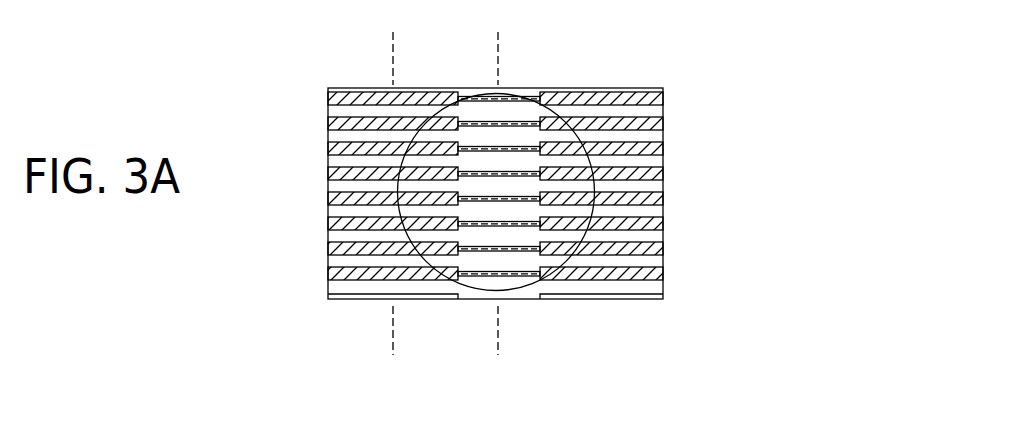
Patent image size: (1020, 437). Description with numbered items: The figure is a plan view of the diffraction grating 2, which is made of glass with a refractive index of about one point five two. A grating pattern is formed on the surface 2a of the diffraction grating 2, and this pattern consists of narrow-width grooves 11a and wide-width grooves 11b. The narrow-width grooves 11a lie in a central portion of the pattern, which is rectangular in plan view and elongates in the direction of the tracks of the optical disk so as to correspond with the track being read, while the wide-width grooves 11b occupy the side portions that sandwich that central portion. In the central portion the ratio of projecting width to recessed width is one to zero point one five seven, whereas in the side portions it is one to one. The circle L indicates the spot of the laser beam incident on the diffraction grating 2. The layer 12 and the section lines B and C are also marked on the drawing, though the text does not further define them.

The diffraction grating 2 is at (318, 207).
The surface 2a is at (329, 109).
The narrow-width grooves 11a is at (521, 120).
The wide-width grooves 11b is at (624, 297).
The dielectric / insulating layer 12 is at (600, 137).
The light spot L is at (436, 112).
The section line B- B is at (499, 194).
The section line C- C is at (393, 194).